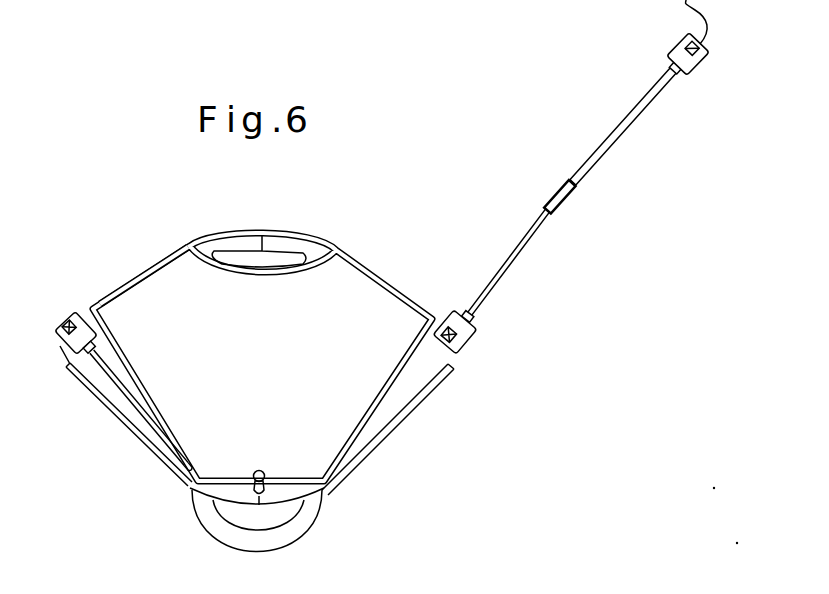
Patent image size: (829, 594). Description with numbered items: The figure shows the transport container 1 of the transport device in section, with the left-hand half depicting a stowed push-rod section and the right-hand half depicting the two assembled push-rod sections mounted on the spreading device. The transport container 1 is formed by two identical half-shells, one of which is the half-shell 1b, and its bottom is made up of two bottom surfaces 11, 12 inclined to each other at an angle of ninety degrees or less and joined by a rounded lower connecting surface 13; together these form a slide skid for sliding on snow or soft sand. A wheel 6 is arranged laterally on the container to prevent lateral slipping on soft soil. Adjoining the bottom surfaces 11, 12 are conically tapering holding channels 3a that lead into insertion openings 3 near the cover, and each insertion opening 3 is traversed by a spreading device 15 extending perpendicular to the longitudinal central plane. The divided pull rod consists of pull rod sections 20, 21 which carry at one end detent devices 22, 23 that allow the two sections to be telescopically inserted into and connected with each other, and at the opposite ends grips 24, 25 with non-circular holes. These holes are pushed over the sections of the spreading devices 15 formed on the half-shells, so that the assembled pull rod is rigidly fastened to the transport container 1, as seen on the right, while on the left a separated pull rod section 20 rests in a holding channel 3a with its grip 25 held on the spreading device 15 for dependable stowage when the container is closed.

The transport container 1 is at (359, 245).
The half-shell 1b is at (172, 256).
The insertion opening 3 is at (413, 429).
The holding channel 3a is at (277, 421).
The wheel 6 is at (286, 537).
The bottom surface 11 is at (416, 410).
The bottom surface 12 is at (95, 398).
The connecting surface 13 is at (242, 509).
The spreading device 15 is at (66, 324).
The pull rod section 20 is at (126, 402).
The pull rod section 21 is at (510, 268).
The detent device 22 is at (575, 200).
The detent device 23 is at (181, 477).
The grip 24 is at (677, 52).
The grip 25 is at (86, 315).